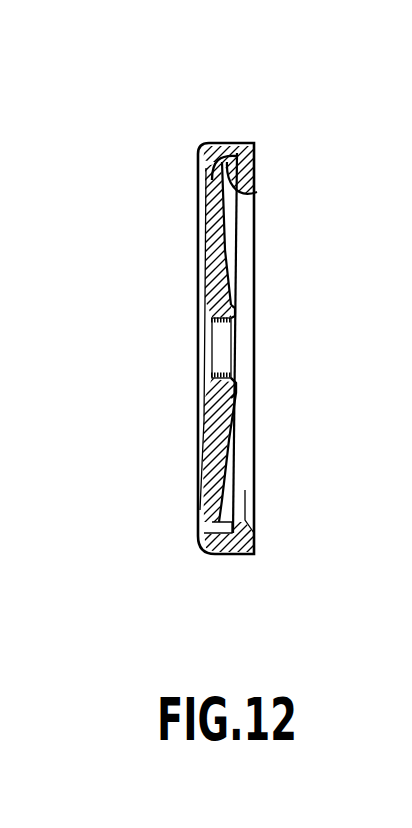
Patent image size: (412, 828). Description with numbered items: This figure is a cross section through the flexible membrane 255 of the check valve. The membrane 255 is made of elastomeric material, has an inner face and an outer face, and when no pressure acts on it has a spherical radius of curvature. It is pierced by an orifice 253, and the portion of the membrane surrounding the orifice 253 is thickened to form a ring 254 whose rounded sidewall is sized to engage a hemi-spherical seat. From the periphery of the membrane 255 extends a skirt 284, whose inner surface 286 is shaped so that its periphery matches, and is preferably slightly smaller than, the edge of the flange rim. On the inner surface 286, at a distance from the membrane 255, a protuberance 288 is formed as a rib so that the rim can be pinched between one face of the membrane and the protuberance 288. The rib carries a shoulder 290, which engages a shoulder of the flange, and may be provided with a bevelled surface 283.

The flexible membrane 255 is at (182, 147).
The skirt 284 is at (222, 143).
The protuberance 288 is at (256, 145).
The inner surface 286 is at (257, 192).
The bevelled surface 283 is at (243, 283).
The orifice 253 is at (222, 350).
The ring 254 is at (237, 402).
The shoulder 290 is at (200, 543).